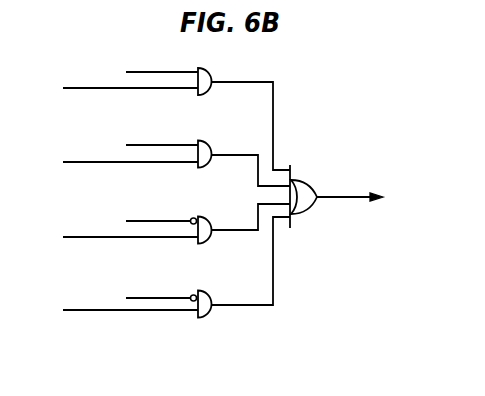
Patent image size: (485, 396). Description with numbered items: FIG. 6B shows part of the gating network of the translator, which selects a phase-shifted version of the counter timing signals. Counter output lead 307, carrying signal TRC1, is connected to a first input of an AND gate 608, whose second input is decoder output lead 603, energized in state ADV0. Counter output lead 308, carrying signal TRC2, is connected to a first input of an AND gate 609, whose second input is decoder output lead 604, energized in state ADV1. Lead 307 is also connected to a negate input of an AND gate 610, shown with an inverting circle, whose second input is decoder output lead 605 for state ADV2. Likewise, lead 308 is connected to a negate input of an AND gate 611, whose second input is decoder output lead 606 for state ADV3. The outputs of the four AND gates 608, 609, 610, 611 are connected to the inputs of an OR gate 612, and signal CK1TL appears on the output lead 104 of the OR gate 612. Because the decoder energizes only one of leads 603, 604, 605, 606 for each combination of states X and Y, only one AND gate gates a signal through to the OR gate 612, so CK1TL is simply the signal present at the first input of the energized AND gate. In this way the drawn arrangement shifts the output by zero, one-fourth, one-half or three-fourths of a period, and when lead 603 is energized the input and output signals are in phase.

The output lead 307 is at (174, 72).
The output lead 308 is at (178, 145).
The decoder output lead 603 is at (132, 90).
The decoder output lead 604 is at (131, 164).
The decoder output lead 605 is at (131, 239).
The decoder output lead 606 is at (137, 314).
The AND gate 608 is at (208, 72).
The AND gate 609 is at (208, 146).
The AND gate 610 is at (208, 221).
The AND gate 611 is at (208, 296).
The OR gate 612 is at (310, 210).
The output lead 104 is at (337, 204).